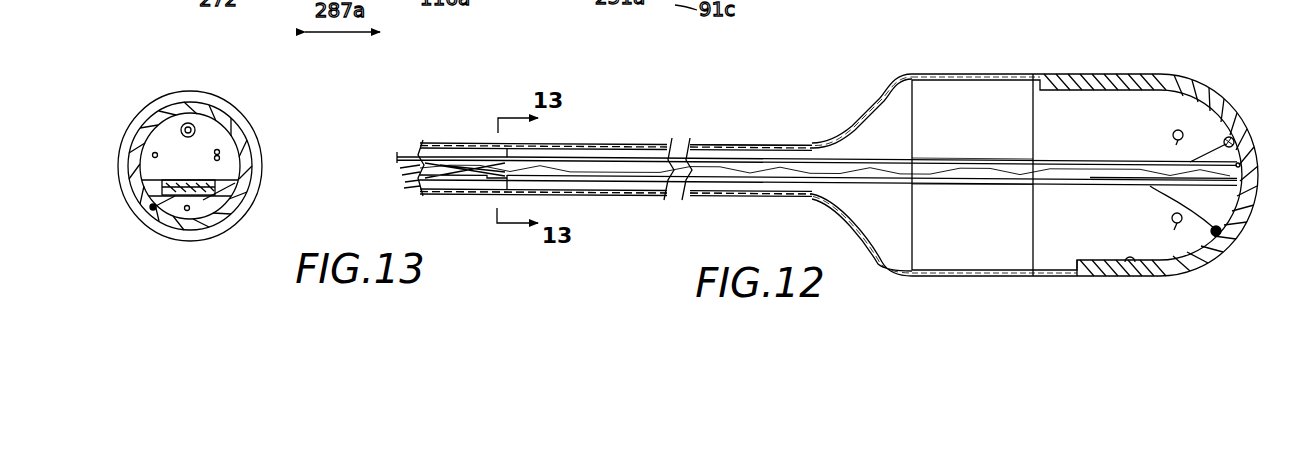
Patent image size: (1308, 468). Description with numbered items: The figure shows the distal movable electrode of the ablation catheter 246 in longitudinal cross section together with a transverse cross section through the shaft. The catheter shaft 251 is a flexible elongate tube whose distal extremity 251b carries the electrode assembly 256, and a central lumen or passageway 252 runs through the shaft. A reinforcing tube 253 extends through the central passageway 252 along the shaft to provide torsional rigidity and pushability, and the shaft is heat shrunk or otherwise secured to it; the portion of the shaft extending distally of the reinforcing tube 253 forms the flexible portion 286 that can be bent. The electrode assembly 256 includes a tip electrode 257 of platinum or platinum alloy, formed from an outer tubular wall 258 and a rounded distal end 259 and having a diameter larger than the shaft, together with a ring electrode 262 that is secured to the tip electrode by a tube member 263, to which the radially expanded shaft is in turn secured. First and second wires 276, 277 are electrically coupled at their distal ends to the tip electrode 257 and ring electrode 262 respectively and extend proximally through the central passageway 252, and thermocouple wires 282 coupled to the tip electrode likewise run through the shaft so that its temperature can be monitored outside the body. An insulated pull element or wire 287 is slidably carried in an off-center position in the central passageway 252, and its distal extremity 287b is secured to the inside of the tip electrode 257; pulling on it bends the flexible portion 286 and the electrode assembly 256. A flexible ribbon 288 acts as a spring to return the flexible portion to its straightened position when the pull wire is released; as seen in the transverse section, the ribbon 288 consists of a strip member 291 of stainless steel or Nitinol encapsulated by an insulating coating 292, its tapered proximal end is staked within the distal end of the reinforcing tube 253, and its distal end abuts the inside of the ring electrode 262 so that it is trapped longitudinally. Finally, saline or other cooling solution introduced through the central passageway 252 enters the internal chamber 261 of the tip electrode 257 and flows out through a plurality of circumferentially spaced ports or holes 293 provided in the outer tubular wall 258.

In FIG. 12, the ablation catheter 246 is at (1208, 60).
In FIG. 13, the catheter shaft 251 is at (228, 112).
In FIG. 12, the catheter shaft 251 is at (558, 142).
In FIG. 12, the distal extremity 251b is at (755, 146).
In FIG. 12, the central lumen or passageway 252 is at (594, 149).
In FIG. 13, the reinforcing tube 253 is at (193, 112).
In FIG. 12, the reinforcing tube 253 is at (463, 194).
In FIG. 12, the electrode assembly 256 is at (1208, 281).
In FIG. 12, the tip electrode 257 is at (1152, 72).
In FIG. 12, the outer tubular wall 258 is at (1113, 275).
In FIG. 12, the rounded distal end 259 is at (1225, 108).
In FIG. 12, the internal chamber 261 is at (1130, 263).
In FIG. 12, the ring electrode 262 is at (948, 73).
In FIG. 12, the tube member 263 is at (1045, 74).
In FIG. 13, the first wire 276 is at (152, 154).
In FIG. 12, the first wire 276 is at (1210, 150).
In FIG. 13, the second wire 277 is at (187, 212).
In FIG. 12, the second wire 277 is at (928, 245).
In FIG. 13, the thermocouple wires 282 is at (222, 157).
In FIG. 12, the thermocouple wires 282 is at (1153, 190).
In FIG. 12, the flexible portion 286 is at (577, 197).
In FIG. 13, the pull element or wire 287 is at (184, 127).
In FIG. 12, the pull element or wire 287 is at (412, 157).
In FIG. 12, the distal extremity 287b is at (1030, 164).
In FIG. 13, the flexible ribbon 288 is at (150, 208).
In FIG. 12, the flexible ribbon 288 is at (1010, 188).
In FIG. 13, the strip member 291 is at (203, 200).
In FIG. 13, the coating 292 is at (160, 223).
In FIG. 12, the ports or holes 293 is at (1172, 137).